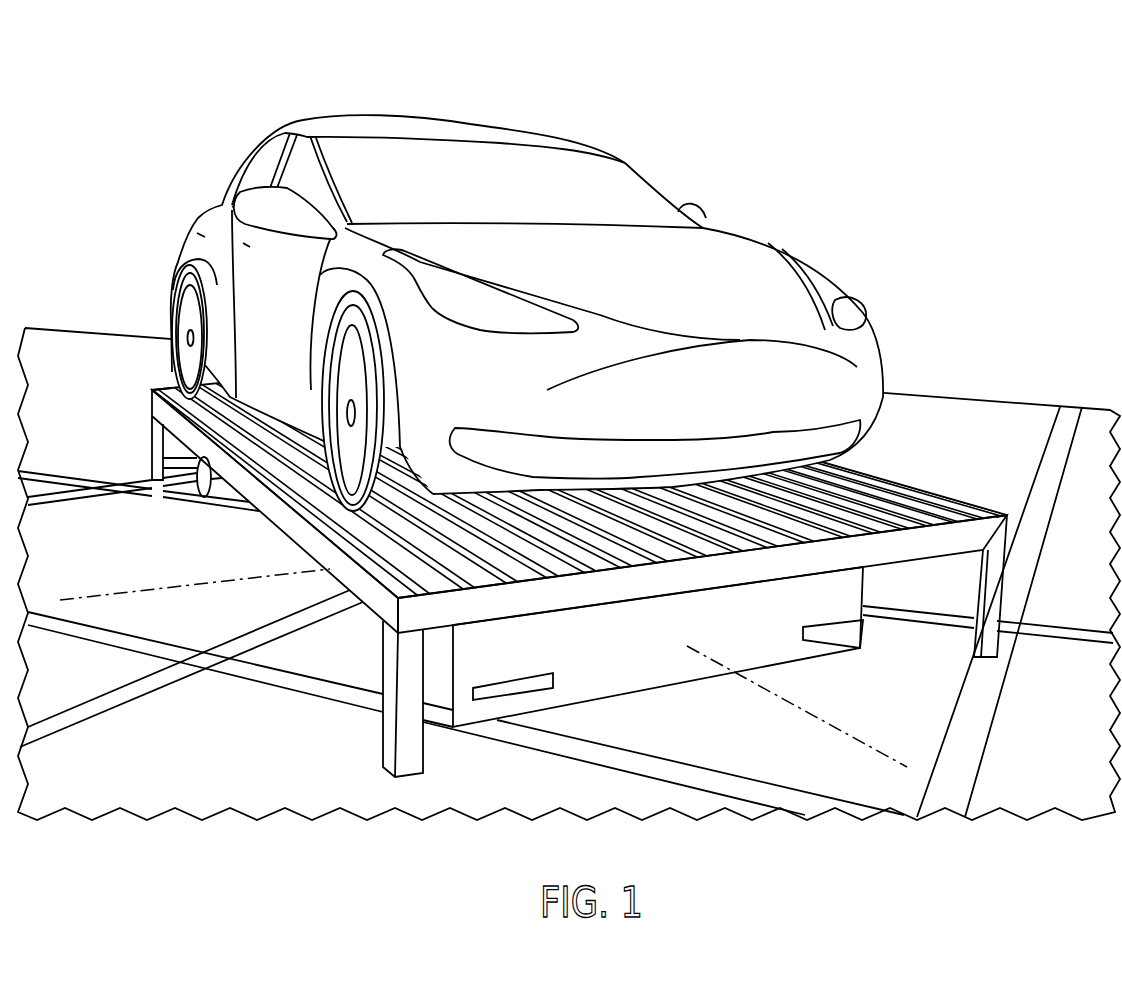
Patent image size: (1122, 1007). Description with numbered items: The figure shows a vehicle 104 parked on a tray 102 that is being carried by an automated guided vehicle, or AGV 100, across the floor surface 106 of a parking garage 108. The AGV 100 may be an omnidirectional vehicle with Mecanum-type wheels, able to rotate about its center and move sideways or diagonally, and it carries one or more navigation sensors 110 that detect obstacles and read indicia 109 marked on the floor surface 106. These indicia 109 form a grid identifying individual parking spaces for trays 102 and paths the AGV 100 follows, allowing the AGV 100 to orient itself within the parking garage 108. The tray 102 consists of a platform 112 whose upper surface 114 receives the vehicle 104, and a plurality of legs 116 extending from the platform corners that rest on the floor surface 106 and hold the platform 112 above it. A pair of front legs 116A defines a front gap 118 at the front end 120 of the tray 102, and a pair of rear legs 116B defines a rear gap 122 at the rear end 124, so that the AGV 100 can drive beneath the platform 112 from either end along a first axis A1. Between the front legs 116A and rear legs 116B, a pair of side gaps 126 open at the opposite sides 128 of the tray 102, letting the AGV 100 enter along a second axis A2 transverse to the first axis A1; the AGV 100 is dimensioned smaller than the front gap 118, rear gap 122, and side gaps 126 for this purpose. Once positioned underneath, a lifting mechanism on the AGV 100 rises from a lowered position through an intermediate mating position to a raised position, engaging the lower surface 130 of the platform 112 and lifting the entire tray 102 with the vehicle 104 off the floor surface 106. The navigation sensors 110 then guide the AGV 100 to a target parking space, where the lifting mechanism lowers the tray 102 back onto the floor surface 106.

The AGV 100 is at (735, 675).
The tray 102 is at (977, 473).
The vehicle 104 is at (670, 177).
The floor surface 106 is at (50, 338).
The parking garage 108 is at (897, 118).
The indicia 109 is at (82, 705).
The navigation sensors 110 is at (548, 677).
The platform 112 is at (912, 503).
The upper surface 114 is at (488, 568).
The legs 116 is at (573, 601).
The front legs 116A is at (382, 765).
The rear legs 116B is at (150, 447).
The front gap 118 is at (570, 713).
The front end 120 is at (993, 514).
The rear gap 122 is at (177, 462).
The rear end 124 is at (157, 387).
The side gaps 126 is at (337, 663).
The sides 128 is at (327, 570).
The lower surface 130 is at (650, 600).
The first axis A1 is at (847, 732).
The second axis A2 is at (82, 597).